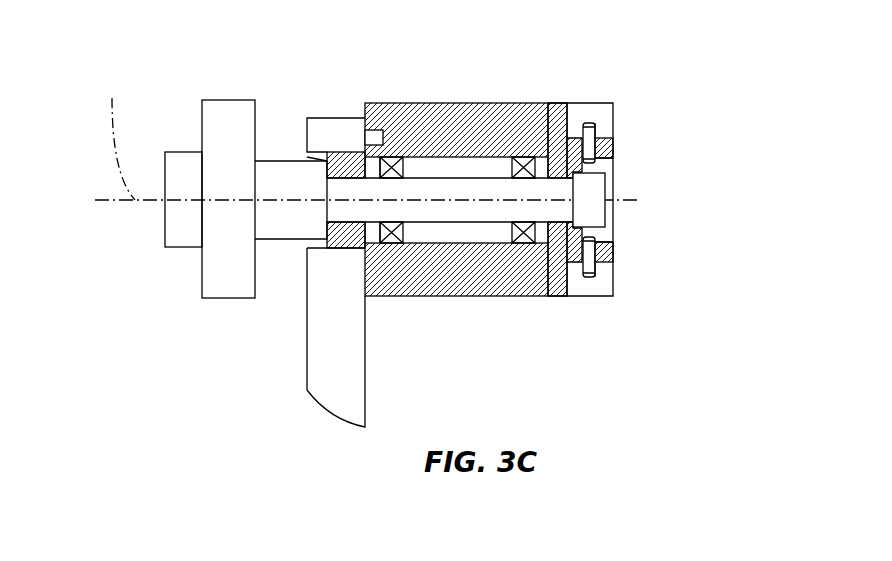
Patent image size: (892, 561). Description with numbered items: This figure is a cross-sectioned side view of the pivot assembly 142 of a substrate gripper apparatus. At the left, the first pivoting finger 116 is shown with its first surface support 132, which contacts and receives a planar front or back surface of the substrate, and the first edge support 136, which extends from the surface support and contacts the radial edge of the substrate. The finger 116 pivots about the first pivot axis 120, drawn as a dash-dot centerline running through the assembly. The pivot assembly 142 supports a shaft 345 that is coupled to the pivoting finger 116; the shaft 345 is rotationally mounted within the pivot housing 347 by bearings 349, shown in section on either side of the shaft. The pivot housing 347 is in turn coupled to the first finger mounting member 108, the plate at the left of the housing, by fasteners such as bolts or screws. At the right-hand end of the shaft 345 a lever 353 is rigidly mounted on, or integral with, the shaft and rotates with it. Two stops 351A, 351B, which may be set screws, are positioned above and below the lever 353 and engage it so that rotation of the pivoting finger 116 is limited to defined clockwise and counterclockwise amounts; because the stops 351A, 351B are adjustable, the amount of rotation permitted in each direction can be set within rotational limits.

The first finger mounting member 108 is at (306, 366).
The first pivoting finger 116 is at (192, 180).
The first pivot axis 120 is at (366, 137).
The first surface support 132 is at (202, 283).
The first edge support 136 is at (163, 218).
The pivot assembly 142 is at (525, 204).
The shaft 345 is at (470, 188).
The pivot housing 347 is at (460, 312).
The bearings 349 is at (390, 245).
The stop 351A is at (597, 167).
The stop 351B is at (597, 236).
The lever 353 is at (603, 188).